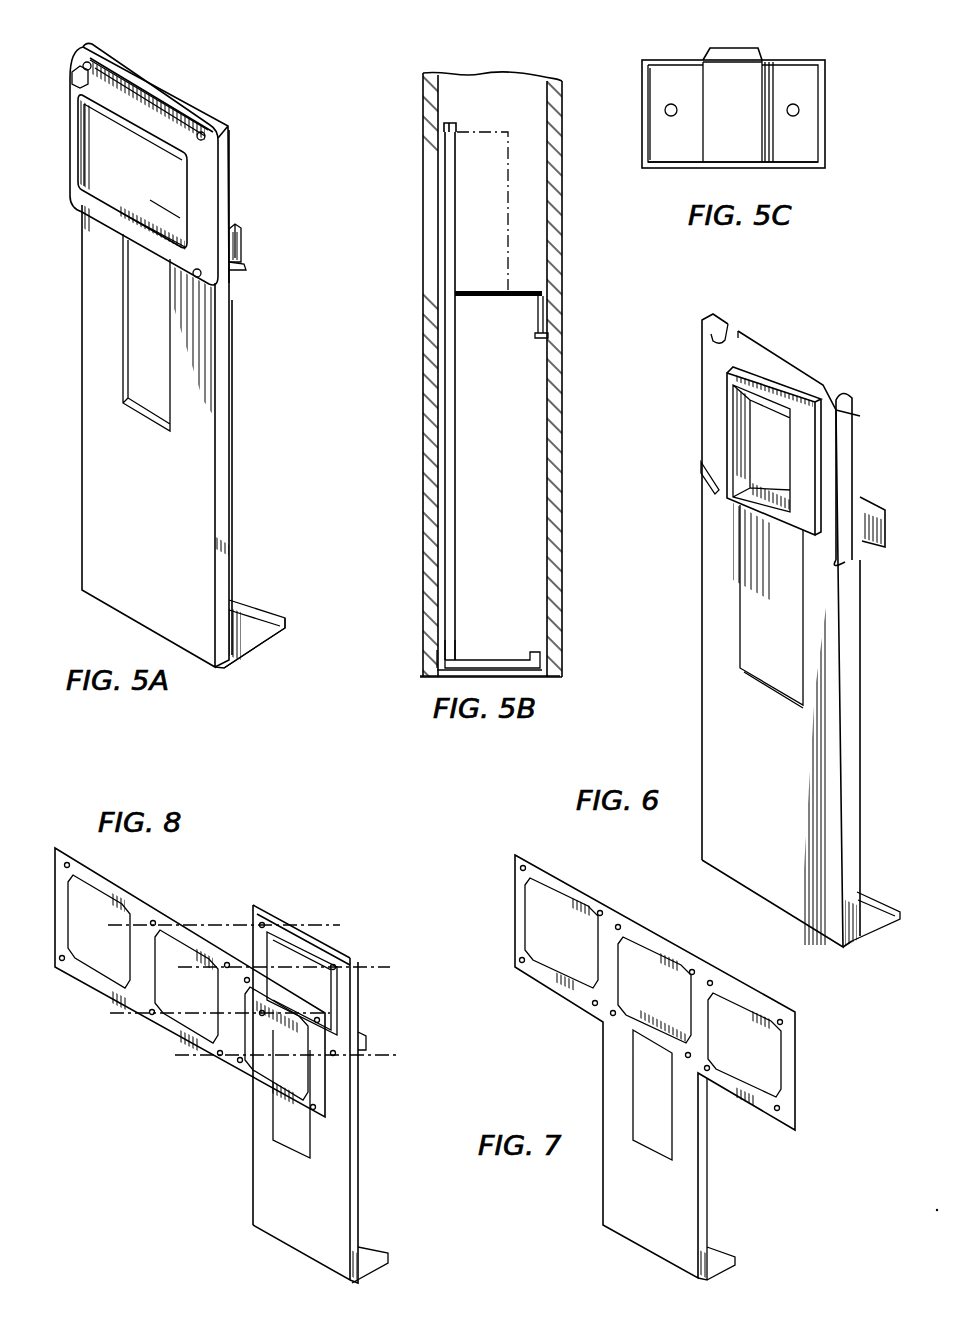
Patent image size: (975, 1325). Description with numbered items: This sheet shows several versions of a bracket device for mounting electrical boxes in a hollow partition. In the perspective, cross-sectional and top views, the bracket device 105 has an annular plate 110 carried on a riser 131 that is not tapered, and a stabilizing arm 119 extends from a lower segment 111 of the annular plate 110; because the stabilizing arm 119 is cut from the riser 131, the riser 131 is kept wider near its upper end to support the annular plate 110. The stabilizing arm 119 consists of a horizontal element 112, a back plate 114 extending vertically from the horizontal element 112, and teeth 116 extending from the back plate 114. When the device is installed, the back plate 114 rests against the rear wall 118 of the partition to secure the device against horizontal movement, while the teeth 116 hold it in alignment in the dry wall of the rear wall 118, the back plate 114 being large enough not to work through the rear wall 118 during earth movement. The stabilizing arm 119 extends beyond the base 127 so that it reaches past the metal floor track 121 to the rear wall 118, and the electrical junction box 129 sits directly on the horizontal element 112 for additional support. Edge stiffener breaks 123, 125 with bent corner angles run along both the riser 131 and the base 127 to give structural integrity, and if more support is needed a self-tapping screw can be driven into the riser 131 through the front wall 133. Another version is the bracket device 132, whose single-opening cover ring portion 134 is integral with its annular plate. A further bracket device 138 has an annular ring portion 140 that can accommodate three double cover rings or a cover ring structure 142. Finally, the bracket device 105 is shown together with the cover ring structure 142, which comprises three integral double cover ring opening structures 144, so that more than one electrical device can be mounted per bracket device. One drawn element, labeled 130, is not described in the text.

In FIG. 5A, the bracket device 105 is at (236, 126).
In FIG. 5B, the bracket device 105 is at (466, 427).
In FIG. 5C, the bracket device 105 is at (836, 60).
In FIG. 8, the bracket device 105 is at (294, 906).
In FIG. 5A, the annular plate 110 is at (236, 196).
In FIG. 5B, the annular plate 110 is at (458, 122).
In FIG. 8, the annular plate 110 is at (347, 960).
In FIG. 5A, the lower segment 111 is at (125, 197).
In FIG. 8, the lower segment 111 is at (302, 1046).
In FIG. 5A, the horizontal element 112 is at (152, 216).
In FIG. 5B, the horizontal element 112 is at (478, 300).
In FIG. 5C, the horizontal element 112 is at (772, 140).
In FIG. 5A, the back plate 114 is at (243, 246).
In FIG. 5B, the back plate 114 is at (558, 300).
In FIG. 5A, the teeth 116 is at (230, 270).
In FIG. 5B, the teeth 116 is at (550, 330).
In FIG. 5C, the teeth 116 is at (758, 50).
In FIG. 5B, the rear wall 118 is at (562, 346).
In FIG. 5A, the stabilizing arm 119 is at (180, 226).
In FIG. 5C, the stabilizing arm 119 is at (712, 86).
In FIG. 8, the stabilizing arm 119 is at (362, 1040).
In FIG. 5B, the metal floor track 121 is at (527, 305).
In FIG. 5A, the edge stiffener break 123 is at (222, 396).
In FIG. 5B, the edge stiffener break 123 is at (448, 575).
In FIG. 5A, the edge stiffener break 125 is at (253, 642).
In FIG. 5B, the edge stiffener break 125 is at (487, 660).
In FIG. 5A, the base 127 is at (243, 615).
In FIG. 5C, the base 127 is at (780, 72).
In FIG. 8, the base 127 is at (362, 1252).
In FIG. 5B, the junction box 129 is at (485, 130).
In FIG. 6, the hook bar 130 is at (850, 437).
In FIG. 5A, the riser 131 is at (197, 493).
In FIG. 5B, the riser 131 is at (462, 516).
In FIG. 8, the riser 131 is at (258, 1180).
In FIG. 6, the bracket device 132 is at (814, 368).
In FIG. 5B, the front wall 133 is at (423, 354).
In FIG. 6, the cover ring portion 134 is at (747, 451).
In FIG. 7, the bracket device 138 is at (738, 1142).
In FIG. 7, the annular ring portion 140 is at (705, 975).
In FIG. 8, the cover ring structure 142 is at (190, 914).
In FIG. 8, the double cover ring opening structures 144 is at (152, 1010).